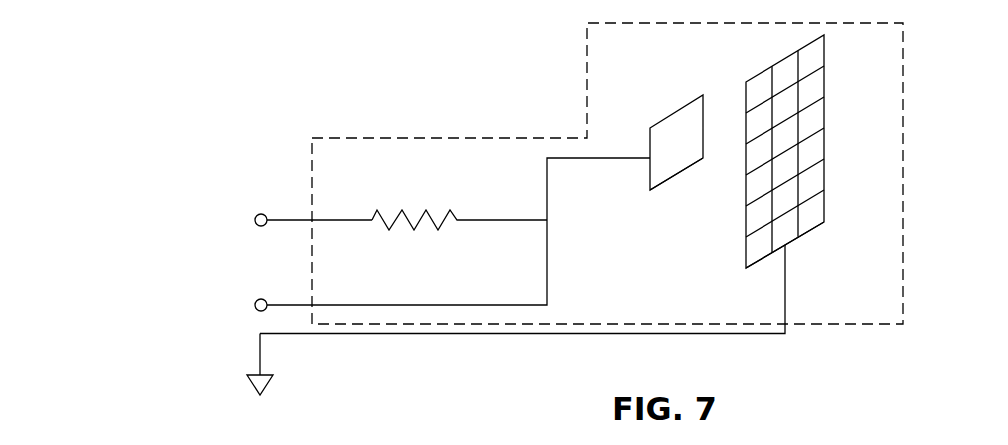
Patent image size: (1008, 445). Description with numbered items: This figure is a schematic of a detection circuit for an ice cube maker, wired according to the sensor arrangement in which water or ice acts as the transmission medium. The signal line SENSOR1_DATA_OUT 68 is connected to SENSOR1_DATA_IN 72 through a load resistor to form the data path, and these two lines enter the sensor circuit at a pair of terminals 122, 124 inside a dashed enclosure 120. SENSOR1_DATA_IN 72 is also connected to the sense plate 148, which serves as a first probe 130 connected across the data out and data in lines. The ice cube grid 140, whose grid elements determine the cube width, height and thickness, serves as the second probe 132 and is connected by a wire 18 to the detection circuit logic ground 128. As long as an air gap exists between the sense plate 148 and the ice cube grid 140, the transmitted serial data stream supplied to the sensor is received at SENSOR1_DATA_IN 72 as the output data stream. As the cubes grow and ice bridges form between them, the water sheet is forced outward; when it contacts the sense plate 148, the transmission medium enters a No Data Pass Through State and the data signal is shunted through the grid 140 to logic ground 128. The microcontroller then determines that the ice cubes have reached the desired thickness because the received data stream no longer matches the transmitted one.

The SENSOR1_DATA_OUT 68 is at (103, 204).
The SENSOR1_DATA_IN 72 is at (100, 320).
The data out terminal 122 is at (261, 210).
The data in terminal 124 is at (254, 298).
The sensor assembly 120 is at (607, 173).
The sense plate 148 is at (682, 118).
The first probe 130 is at (677, 190).
The ice cube grid 140 is at (826, 216).
The second probe 132 is at (806, 238).
The ground wire 18 is at (518, 340).
The logic ground 128 is at (260, 353).